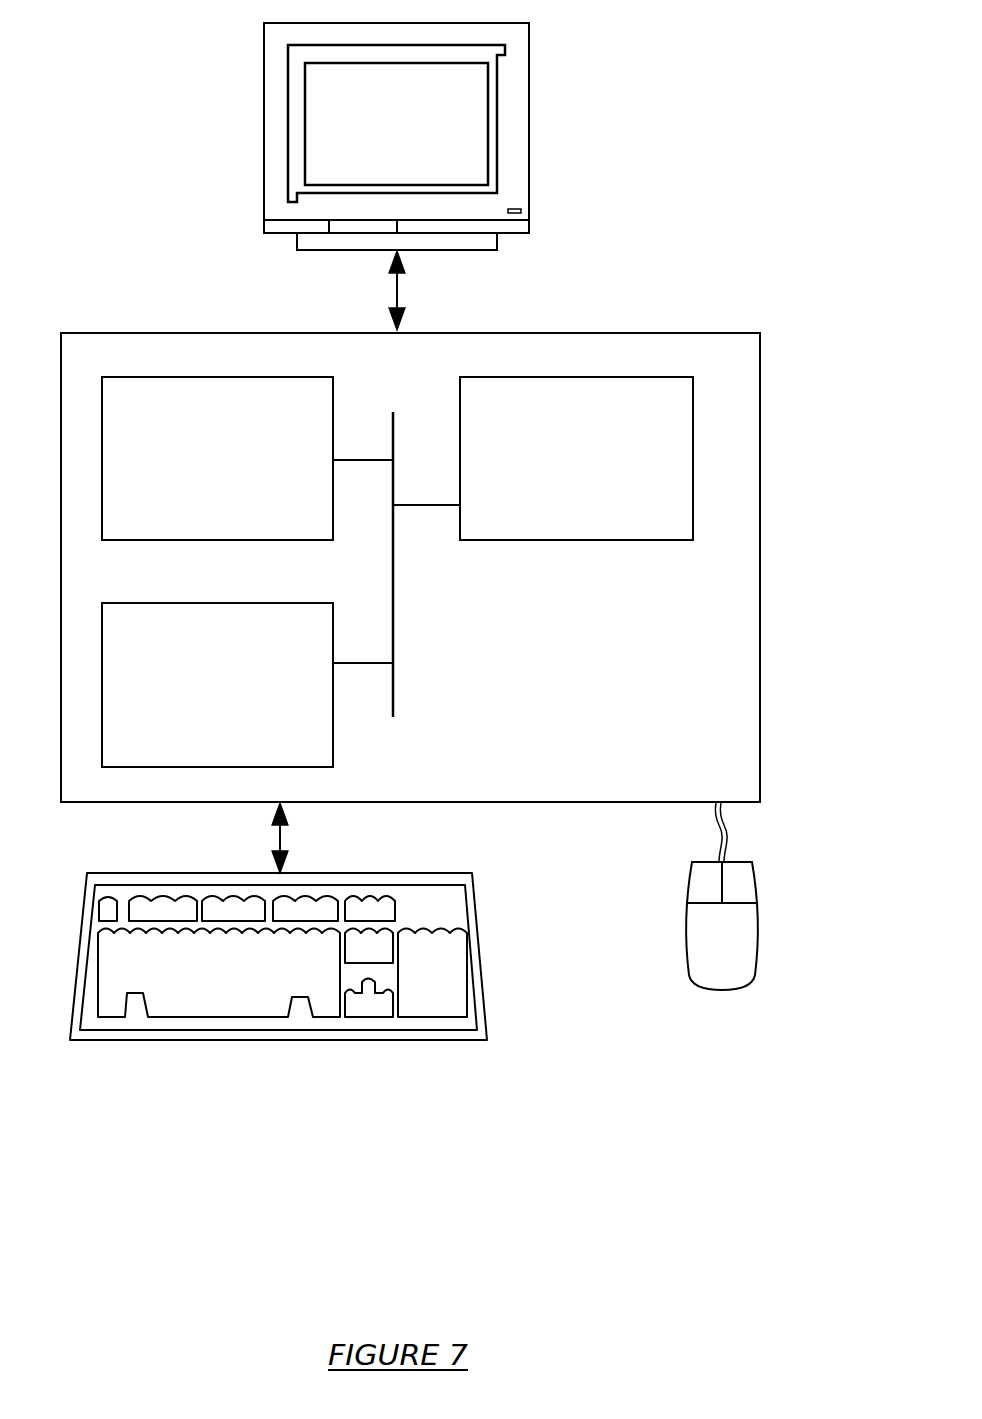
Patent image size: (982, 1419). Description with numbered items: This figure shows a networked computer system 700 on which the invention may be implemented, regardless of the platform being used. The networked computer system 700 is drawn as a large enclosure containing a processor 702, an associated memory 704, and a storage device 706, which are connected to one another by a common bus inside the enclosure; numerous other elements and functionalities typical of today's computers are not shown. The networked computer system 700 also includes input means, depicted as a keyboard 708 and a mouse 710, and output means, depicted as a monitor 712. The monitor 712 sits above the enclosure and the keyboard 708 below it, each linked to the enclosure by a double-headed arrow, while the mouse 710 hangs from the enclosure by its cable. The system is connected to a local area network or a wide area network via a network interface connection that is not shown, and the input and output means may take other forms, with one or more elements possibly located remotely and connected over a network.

The networked computer system 700 is at (742, 194).
The processor 702 is at (573, 469).
The associated memory 704 is at (196, 469).
The storage device 706 is at (193, 699).
The keyboard 708 is at (186, 996).
The mouse 710 is at (700, 936).
The monitor 712 is at (375, 141).